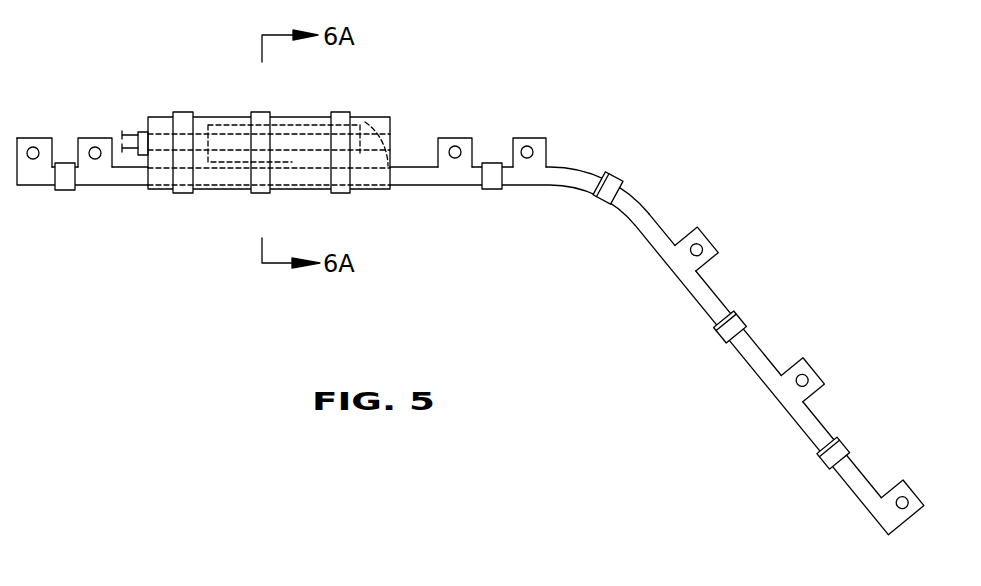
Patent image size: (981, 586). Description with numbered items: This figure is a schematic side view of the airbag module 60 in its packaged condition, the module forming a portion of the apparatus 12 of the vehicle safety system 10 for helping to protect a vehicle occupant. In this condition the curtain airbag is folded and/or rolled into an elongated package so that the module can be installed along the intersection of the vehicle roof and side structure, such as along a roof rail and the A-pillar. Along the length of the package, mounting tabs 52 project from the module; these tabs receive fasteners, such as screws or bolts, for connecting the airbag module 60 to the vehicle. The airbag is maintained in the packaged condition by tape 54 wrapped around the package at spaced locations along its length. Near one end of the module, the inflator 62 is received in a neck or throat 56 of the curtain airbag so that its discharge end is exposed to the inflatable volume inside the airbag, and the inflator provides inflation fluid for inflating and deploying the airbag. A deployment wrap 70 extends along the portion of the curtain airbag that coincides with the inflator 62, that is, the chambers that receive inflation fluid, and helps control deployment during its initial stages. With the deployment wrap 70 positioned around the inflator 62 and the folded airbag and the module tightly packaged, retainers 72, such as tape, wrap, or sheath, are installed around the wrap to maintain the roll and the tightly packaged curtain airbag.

The vehicle safety system 10 is at (730, 88).
The apparatus 12 is at (743, 117).
The airbag module 60 is at (758, 154).
The mounting tabs 52 is at (88, 140).
The tape 54 is at (66, 191).
The throat 56 is at (307, 117).
The inflator 62 is at (148, 117).
The deployment wrap 70 is at (200, 118).
The retainers 72 is at (183, 194).